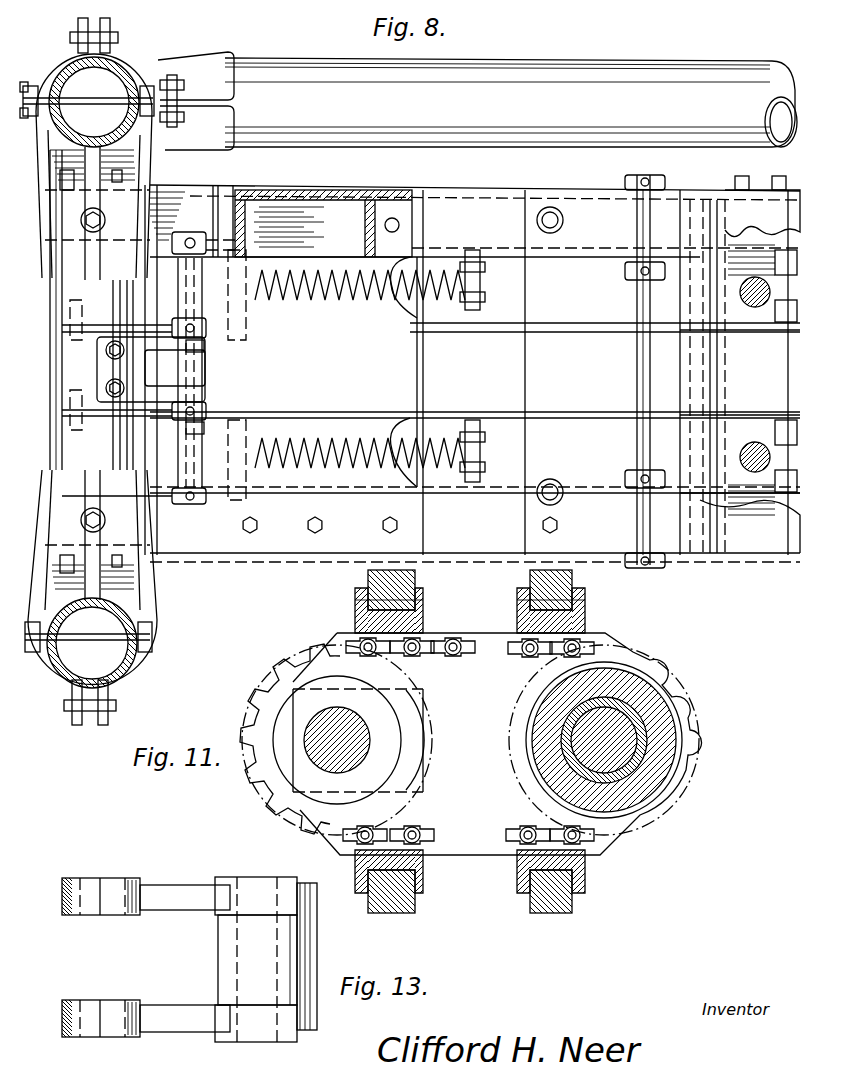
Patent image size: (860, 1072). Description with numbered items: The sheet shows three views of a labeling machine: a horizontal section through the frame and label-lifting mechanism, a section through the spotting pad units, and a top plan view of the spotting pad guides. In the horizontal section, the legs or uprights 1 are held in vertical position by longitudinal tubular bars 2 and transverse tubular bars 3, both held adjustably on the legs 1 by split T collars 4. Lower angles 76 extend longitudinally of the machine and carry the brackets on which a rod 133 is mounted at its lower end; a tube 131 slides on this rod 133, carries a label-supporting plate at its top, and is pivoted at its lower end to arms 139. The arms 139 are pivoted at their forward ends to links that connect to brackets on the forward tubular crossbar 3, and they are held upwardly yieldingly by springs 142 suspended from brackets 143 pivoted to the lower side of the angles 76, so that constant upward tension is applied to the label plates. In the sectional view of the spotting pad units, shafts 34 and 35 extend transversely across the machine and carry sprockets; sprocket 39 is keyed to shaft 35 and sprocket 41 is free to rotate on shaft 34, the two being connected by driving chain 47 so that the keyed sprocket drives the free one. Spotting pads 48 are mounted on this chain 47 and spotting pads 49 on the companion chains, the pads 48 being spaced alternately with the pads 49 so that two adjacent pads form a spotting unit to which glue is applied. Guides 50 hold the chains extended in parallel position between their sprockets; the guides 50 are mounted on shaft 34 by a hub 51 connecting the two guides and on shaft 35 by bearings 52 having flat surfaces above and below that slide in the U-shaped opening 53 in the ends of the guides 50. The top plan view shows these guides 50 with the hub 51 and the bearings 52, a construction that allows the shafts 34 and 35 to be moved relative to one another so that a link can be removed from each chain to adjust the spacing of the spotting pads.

In FIG. 8, the legs or uprights 1 is at (122, 62).
In FIG. 8, the longitudinal tubular bars 2 is at (486, 82).
In FIG. 8, the transverse tubular bars 3 is at (60, 380).
In FIG. 8, the split T collars 4 is at (220, 58).
In FIG. 11, the shaft 34 is at (625, 735).
In FIG. 11, the shaft 35 is at (327, 718).
In FIG. 11, the sprocket 39 is at (258, 711).
In FIG. 11, the sprocket 41 is at (665, 670).
In FIG. 11, the driving chain 47 is at (437, 640).
In FIG. 11, the spotting pads 48 is at (577, 572).
In FIG. 11, the spotting pads 49 is at (365, 573).
In FIG. 11, the guides 50 is at (493, 823).
In FIG. 13, the guides 50 is at (187, 892).
In FIG. 11, the hub 51 is at (640, 788).
In FIG. 13, the hub 51 is at (265, 940).
In FIG. 11, the bearings 52 is at (295, 760).
In FIG. 13, the bearings 52 is at (80, 878).
In FIG. 11, the U-shaped opening 53 is at (410, 702).
In FIG. 8, the lower angles 76 is at (480, 208).
In FIG. 8, the tube 131 is at (780, 312).
In FIG. 8, the rod 133 is at (745, 445).
In FIG. 8, the arms 139 is at (497, 412).
In FIG. 8, the springs 142 is at (420, 440).
In FIG. 8, the brackets 143 is at (606, 265).